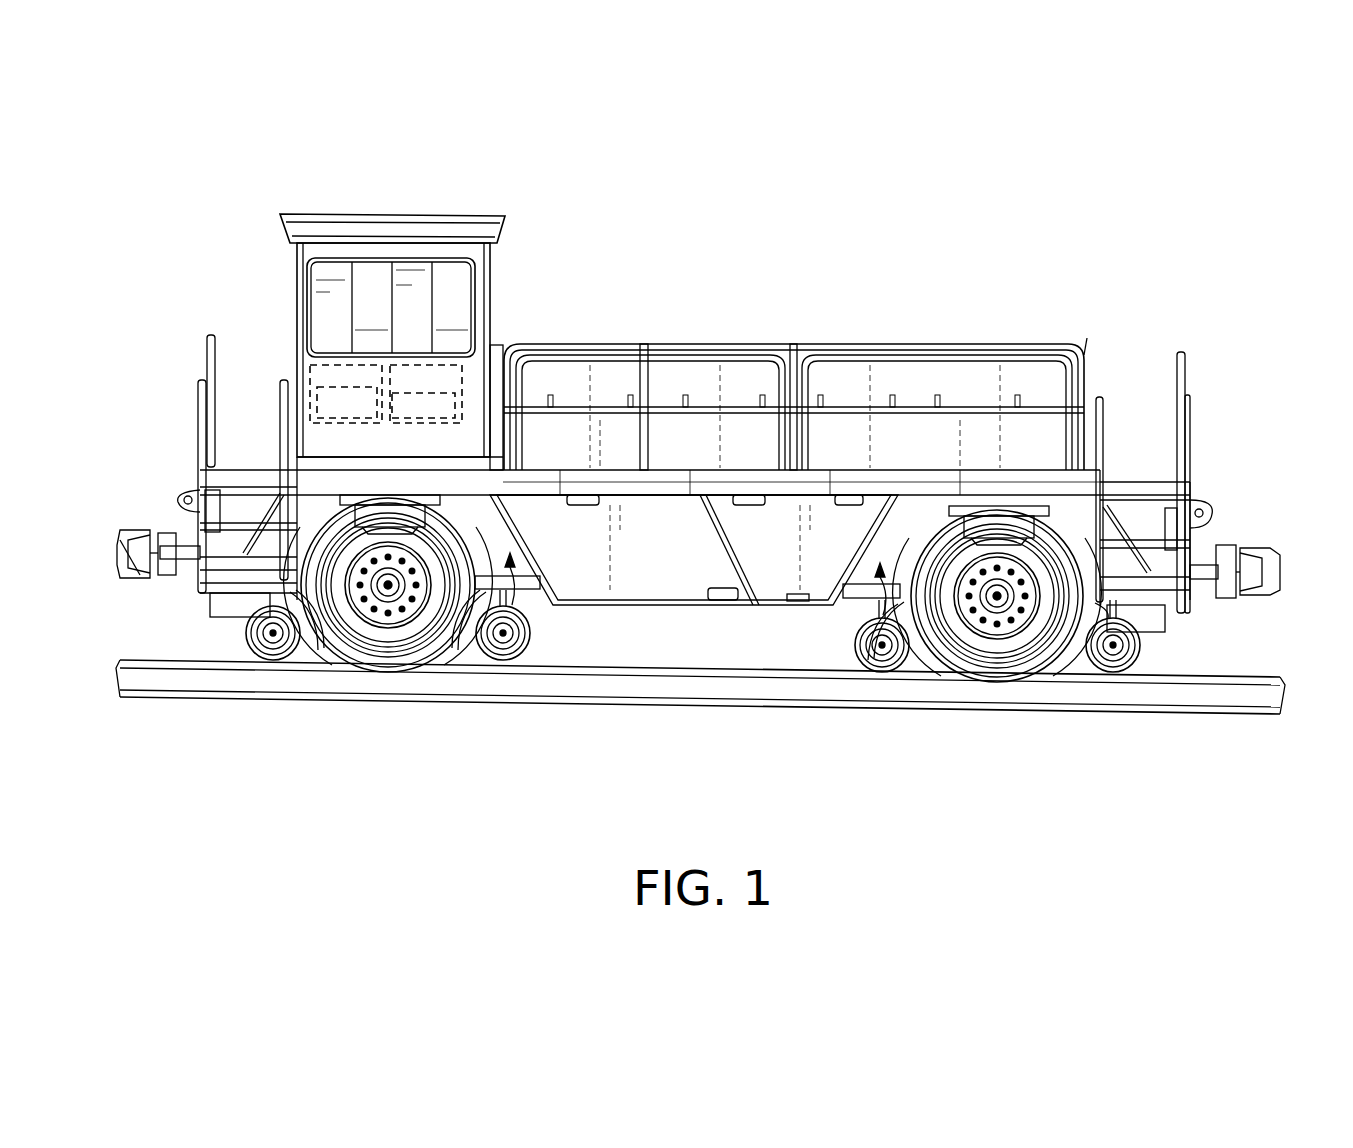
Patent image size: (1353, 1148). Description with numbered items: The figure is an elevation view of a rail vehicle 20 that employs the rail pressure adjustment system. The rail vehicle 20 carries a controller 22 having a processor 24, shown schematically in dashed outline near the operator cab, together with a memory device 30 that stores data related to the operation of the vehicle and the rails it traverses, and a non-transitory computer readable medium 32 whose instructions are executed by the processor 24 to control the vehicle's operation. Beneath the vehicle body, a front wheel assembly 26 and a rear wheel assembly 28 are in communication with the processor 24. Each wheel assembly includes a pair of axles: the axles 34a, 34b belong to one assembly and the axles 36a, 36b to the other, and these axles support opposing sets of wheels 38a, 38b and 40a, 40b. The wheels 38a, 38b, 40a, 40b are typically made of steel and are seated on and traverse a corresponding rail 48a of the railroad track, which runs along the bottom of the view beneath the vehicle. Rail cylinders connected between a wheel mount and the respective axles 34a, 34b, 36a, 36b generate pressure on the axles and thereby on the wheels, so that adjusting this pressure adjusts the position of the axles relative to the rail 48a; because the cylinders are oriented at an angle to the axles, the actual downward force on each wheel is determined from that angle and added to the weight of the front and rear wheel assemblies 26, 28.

The rail vehicle 20 is at (219, 200).
The controller 22 is at (308, 380).
The processor 24 is at (313, 388).
The front wheel assembly 26 is at (700, 729).
The rear wheel assembly 28 is at (357, 683).
The memory device 30 is at (490, 362).
The non-transitory computer readable medium 32 is at (464, 410).
The axle 34a is at (1122, 652).
The axle 34b is at (880, 650).
The axle 36a is at (500, 640).
The axle 36b is at (270, 640).
The wheel 38a is at (1167, 679).
The wheel 38b is at (896, 678).
The wheel 40a is at (484, 678).
The wheel 40b is at (217, 671).
The rail 48a is at (291, 684).